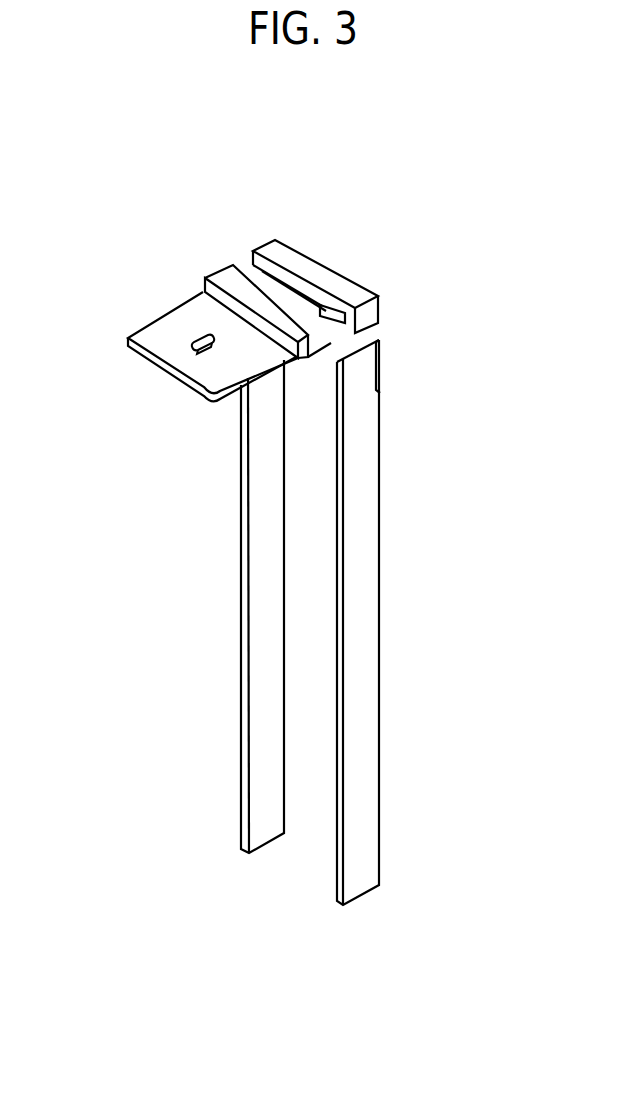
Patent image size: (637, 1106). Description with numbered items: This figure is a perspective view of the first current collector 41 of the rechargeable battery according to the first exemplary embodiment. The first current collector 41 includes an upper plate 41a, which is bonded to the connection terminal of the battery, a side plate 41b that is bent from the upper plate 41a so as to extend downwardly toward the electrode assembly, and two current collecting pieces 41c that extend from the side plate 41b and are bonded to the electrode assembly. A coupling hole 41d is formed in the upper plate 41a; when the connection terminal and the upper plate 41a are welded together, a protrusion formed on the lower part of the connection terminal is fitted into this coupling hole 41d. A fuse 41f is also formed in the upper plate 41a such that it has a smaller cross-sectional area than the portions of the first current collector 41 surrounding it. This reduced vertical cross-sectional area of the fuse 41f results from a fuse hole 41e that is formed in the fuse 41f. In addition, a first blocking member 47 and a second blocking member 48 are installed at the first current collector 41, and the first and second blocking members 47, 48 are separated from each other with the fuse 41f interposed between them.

The first current collector 41 is at (362, 258).
The upper plate 41a is at (175, 328).
The side plate 41b is at (375, 330).
The current collecting pieces 41c is at (360, 634).
The coupling hole 41d is at (193, 337).
The fuse hole 41e is at (294, 287).
The fuse 41f is at (350, 316).
The first blocking member 47 is at (225, 278).
The second blocking member 48 is at (273, 250).